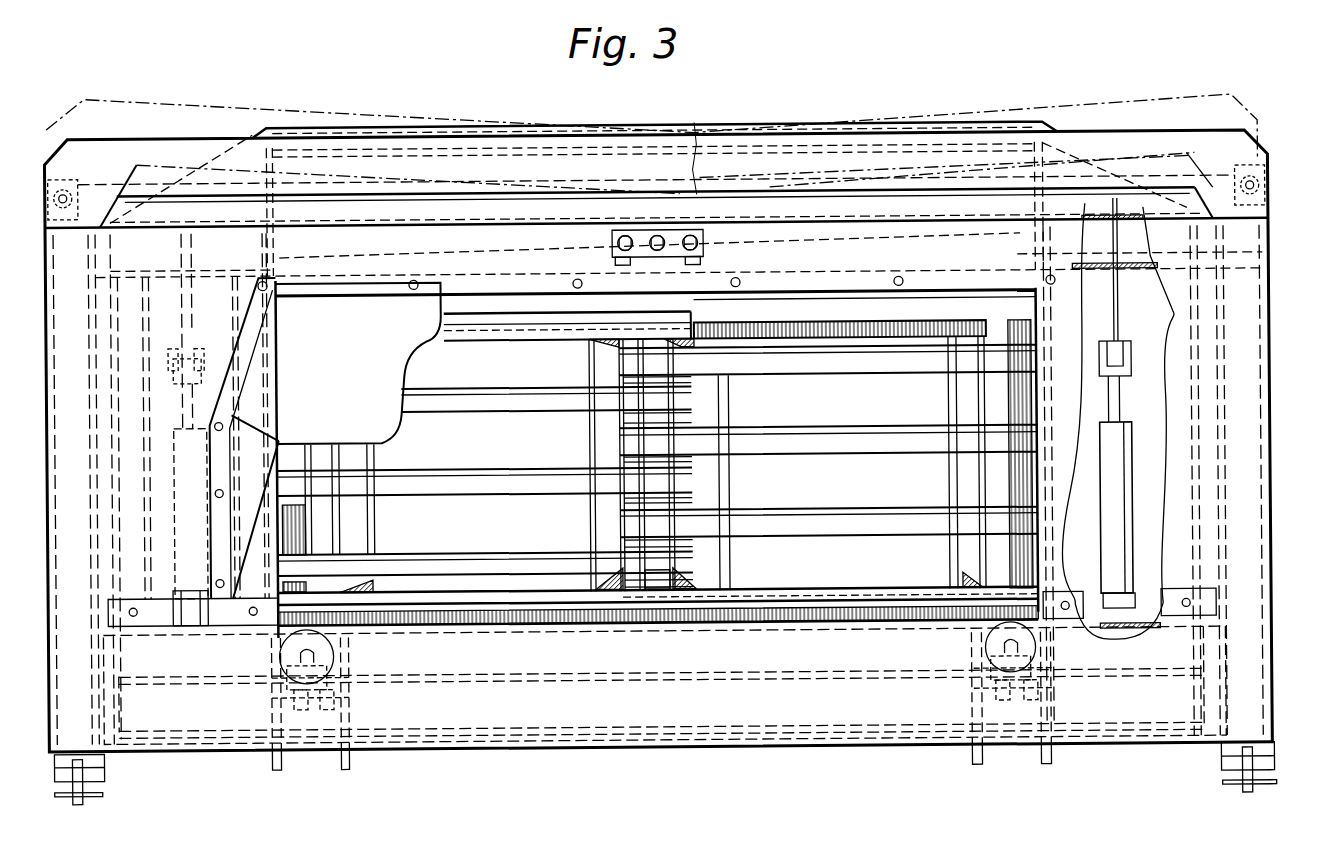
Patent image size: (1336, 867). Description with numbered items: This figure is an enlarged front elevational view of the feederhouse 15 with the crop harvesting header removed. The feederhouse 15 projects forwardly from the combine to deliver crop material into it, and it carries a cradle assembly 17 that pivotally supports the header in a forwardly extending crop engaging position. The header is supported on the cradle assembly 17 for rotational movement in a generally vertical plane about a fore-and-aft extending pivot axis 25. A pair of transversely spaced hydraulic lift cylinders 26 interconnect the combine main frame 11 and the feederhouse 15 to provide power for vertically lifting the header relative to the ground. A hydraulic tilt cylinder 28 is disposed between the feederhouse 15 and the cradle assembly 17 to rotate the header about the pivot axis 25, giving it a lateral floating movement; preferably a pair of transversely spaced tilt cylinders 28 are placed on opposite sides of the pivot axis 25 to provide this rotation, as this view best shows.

The main frame 11 is at (345, 762).
The feederhouse 15 is at (364, 340).
The cradle assembly 17 is at (153, 141).
The pivot axis 25 is at (658, 238).
The hydraulic lift cylinders 26 is at (340, 650).
The hydraulic tilt cylinder 28 is at (203, 465).